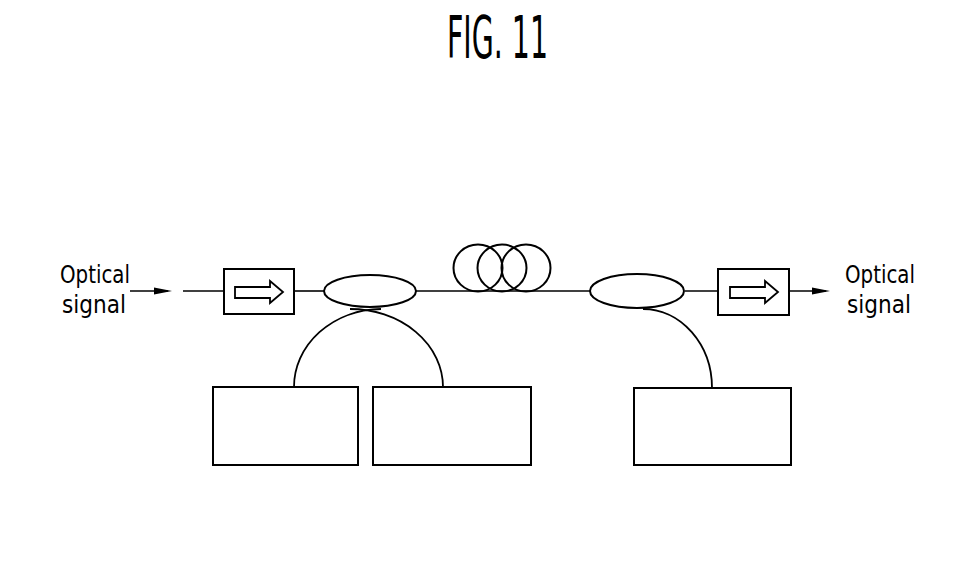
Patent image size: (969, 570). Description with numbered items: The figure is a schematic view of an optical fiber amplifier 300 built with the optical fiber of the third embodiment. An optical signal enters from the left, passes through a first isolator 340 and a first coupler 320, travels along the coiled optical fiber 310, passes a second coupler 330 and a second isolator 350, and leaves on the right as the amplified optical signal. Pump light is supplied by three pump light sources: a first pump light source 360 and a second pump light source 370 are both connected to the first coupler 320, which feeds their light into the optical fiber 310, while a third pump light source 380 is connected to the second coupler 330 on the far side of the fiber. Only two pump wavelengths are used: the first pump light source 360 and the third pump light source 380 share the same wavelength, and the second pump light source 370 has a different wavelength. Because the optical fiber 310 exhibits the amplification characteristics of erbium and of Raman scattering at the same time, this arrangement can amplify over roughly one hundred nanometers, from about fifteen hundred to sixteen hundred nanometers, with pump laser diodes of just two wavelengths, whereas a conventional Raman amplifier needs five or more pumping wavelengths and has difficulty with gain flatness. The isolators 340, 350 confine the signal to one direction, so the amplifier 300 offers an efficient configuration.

The optical fiber amplifier 300 is at (646, 171).
The optical fiber 310 is at (497, 245).
The first coupler 320 is at (370, 275).
The second coupler 330 is at (637, 274).
The first isolator 340 is at (258, 269).
The second isolator 350 is at (755, 269).
The first pump light source 360 is at (297, 465).
The second pump light source 370 is at (443, 465).
The third pump light source 380 is at (720, 466).